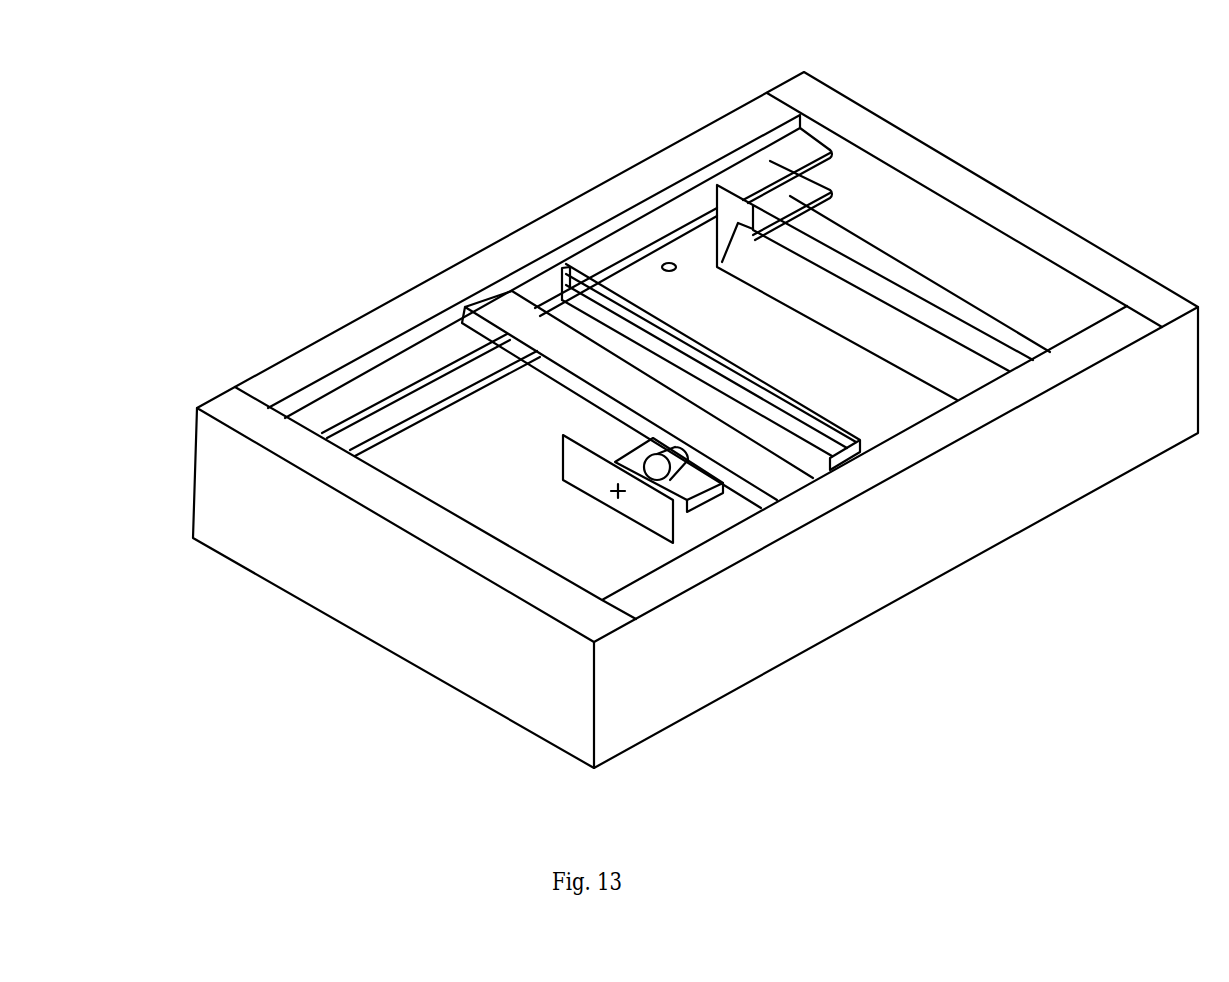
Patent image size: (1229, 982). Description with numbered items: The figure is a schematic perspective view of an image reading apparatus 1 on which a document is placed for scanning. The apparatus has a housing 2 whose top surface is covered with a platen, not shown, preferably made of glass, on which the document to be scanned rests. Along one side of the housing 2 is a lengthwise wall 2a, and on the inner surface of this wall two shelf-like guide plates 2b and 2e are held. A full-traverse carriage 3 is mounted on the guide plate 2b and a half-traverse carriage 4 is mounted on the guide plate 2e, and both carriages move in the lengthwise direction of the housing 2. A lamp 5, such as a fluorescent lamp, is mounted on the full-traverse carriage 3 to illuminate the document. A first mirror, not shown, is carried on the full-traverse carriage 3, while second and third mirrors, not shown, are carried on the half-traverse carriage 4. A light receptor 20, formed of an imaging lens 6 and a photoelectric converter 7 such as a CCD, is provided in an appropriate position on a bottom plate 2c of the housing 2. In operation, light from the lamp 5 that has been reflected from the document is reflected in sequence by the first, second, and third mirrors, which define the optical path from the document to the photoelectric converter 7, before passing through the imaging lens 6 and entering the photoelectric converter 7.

The image reading apparatus 1 is at (495, 188).
The housing 2 is at (678, 148).
The lengthwise wall 2a is at (427, 295).
The guide plate 2b is at (337, 403).
The bottom plate 2c is at (448, 485).
The guide plate 2e is at (402, 410).
The full-traverse carriage 3 is at (805, 458).
The half-traverse carriage 4 is at (990, 358).
The lamp 5 is at (877, 477).
The imaging lens 6 is at (707, 493).
The photoelectric converter 7 is at (597, 483).
The light receptor 20 is at (560, 462).